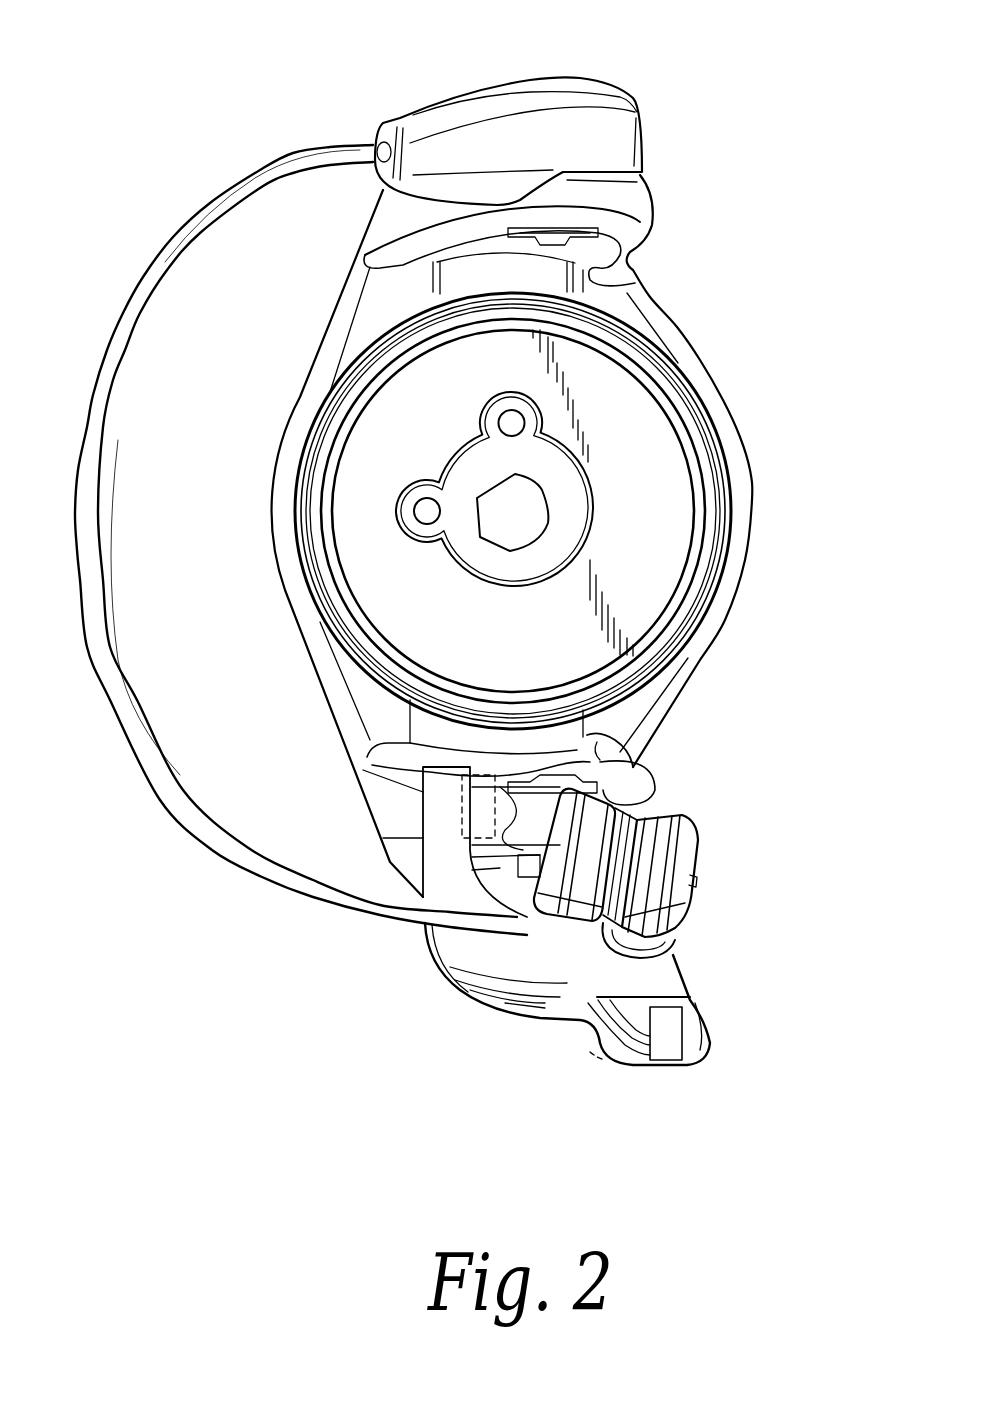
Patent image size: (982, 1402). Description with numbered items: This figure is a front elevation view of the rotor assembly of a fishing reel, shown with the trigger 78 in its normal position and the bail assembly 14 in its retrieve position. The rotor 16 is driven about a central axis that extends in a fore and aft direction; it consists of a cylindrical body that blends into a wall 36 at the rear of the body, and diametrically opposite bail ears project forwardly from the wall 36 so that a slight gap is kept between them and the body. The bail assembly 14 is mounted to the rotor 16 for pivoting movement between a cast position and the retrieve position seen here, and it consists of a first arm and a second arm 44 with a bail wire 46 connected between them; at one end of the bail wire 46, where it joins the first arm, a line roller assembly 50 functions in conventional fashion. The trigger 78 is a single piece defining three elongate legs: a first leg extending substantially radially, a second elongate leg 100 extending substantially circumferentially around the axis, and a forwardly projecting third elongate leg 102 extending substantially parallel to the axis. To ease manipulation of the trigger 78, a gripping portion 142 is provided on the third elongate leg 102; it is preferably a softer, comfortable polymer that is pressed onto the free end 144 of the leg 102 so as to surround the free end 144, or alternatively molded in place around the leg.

The bail assembly 14 is at (345, 134).
The rotor 16 is at (753, 487).
The wall 36 is at (677, 327).
The second arm 44 is at (540, 137).
The bail wire 46 is at (137, 297).
The line roller assembly 50 is at (676, 804).
The trigger 78 is at (585, 962).
The second elongate leg 100 is at (510, 962).
The third elongate leg 102 is at (705, 1000).
The gripping portion 142 is at (637, 1063).
The free end 144 is at (597, 1043).